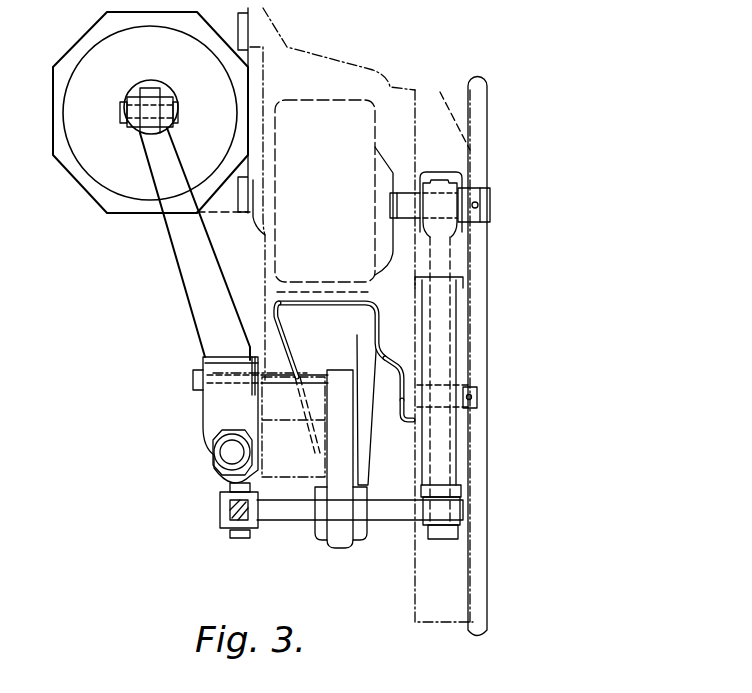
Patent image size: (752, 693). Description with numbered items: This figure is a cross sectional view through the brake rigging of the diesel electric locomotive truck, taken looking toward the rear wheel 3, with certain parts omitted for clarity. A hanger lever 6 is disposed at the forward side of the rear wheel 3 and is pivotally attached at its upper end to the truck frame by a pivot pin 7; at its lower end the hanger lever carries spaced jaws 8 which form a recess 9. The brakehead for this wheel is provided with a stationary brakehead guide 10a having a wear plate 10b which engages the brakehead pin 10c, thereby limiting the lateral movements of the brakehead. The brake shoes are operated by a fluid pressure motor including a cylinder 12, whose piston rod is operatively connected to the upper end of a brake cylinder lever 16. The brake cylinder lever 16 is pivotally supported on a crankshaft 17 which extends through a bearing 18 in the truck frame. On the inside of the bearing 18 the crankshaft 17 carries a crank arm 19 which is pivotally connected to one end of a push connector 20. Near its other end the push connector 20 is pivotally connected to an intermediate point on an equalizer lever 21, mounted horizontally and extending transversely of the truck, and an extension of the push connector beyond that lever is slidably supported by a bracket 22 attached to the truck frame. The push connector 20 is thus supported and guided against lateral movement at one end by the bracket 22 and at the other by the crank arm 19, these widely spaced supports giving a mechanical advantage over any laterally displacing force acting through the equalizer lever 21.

The rear wheel 3 is at (480, 104).
The hanger lever 6 is at (440, 258).
The pivot pin 7 is at (490, 194).
The spaced jaws 8 is at (460, 531).
The recess 9 is at (458, 498).
The stationary brakehead guide 10a is at (327, 377).
The wear plate 10b is at (407, 370).
The brakehead pin 10c is at (410, 418).
The cylinder 12 is at (92, 163).
The brake cylinder lever 16 is at (187, 260).
The crankshaft 17 is at (202, 407).
The bearing 18 is at (290, 440).
The crank arm 19 is at (343, 453).
The push connector 20 is at (320, 543).
The equalizer lever 21 is at (397, 513).
The bracket 22 is at (290, 360).